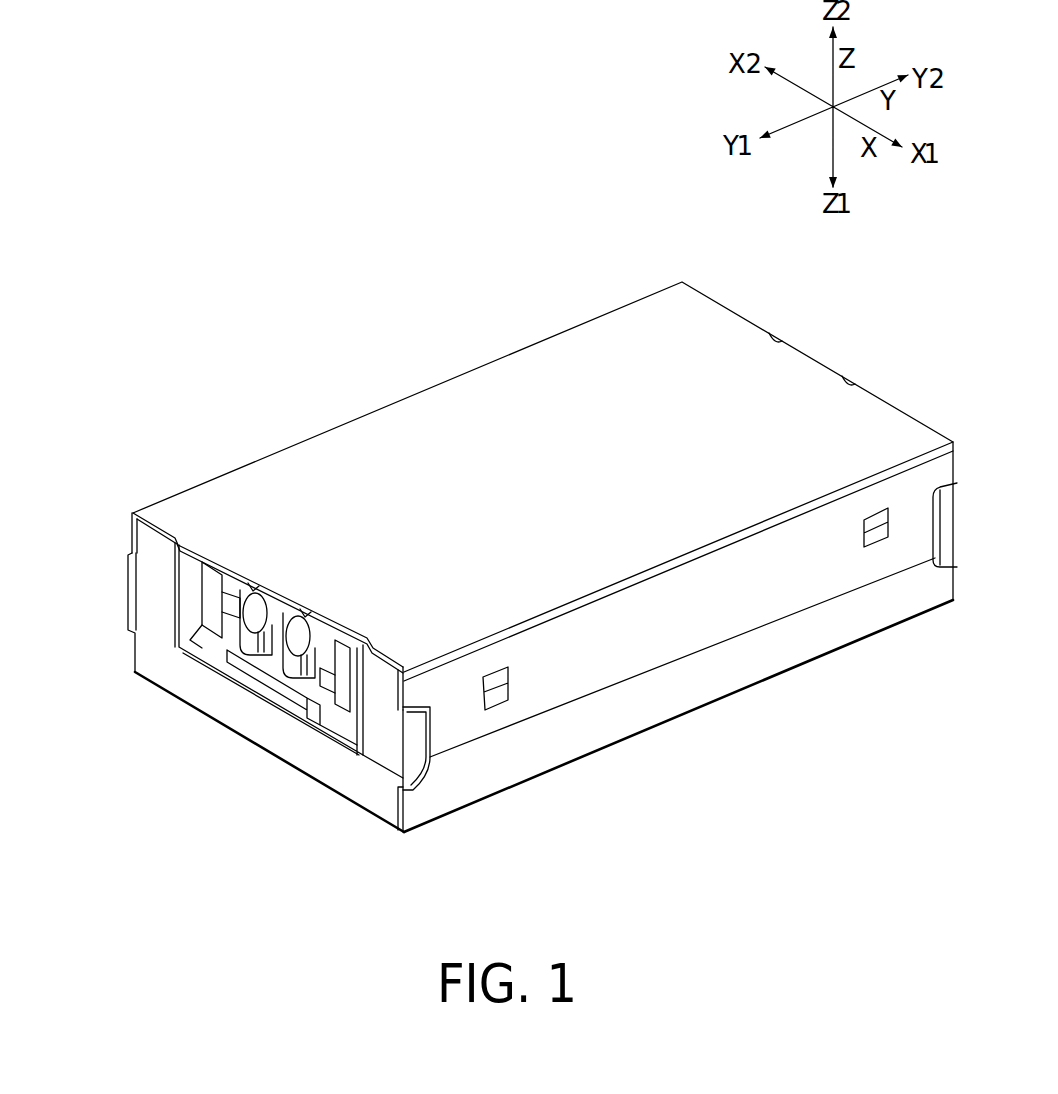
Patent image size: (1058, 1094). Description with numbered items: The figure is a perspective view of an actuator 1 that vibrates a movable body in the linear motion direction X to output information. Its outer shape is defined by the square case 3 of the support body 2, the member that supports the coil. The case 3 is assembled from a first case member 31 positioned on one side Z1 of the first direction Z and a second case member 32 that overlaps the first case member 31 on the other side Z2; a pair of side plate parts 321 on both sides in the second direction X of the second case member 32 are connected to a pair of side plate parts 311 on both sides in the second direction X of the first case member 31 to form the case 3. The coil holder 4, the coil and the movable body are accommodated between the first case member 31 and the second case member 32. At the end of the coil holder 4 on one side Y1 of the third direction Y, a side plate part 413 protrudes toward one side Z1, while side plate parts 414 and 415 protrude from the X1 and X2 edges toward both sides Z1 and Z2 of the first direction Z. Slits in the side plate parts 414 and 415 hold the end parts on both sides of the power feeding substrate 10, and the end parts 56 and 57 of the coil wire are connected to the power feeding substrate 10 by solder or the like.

The actuator 1 is at (322, 327).
The support body 2 is at (269, 649).
The case 3 is at (912, 297).
The coil holder 4 is at (155, 663).
The power feeding substrate 10 is at (201, 650).
The first case member 31 is at (793, 630).
The second case member 32 is at (808, 405).
The end part of coil edge 56 is at (327, 657).
The end part of coil edge 57 is at (272, 640).
The side plate part 311 is at (765, 660).
The side plate part 321 is at (640, 652).
The side plate part 413 is at (267, 730).
The side plate part 414 is at (383, 725).
The side plate part 415 is at (150, 580).